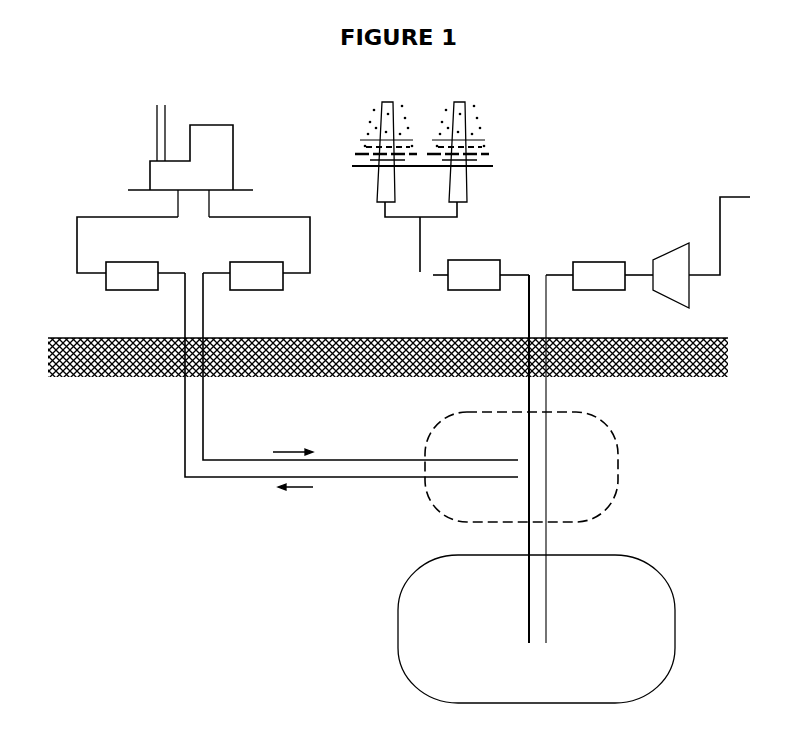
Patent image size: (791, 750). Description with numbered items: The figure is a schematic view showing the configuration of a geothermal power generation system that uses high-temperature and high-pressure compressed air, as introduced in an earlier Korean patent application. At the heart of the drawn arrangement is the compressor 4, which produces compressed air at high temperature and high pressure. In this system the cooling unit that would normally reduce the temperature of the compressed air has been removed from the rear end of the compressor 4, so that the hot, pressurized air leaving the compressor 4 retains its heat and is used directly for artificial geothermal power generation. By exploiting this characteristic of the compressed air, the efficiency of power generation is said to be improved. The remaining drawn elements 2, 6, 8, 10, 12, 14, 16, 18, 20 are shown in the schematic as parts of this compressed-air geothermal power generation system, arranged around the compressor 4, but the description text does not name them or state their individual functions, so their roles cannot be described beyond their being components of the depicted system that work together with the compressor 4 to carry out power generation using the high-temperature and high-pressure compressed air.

The exhaust stacks / combustion gas source 2 is at (376, 178).
The compressor 4 is at (470, 260).
The underground storage reservoir 6 is at (398, 632).
The injection and withdrawal well pipes 8 is at (529, 500).
The heat exchange zone 10 is at (432, 497).
The circulation pipes 12 is at (213, 461).
The heat exchanger unit 14 is at (285, 291).
The heat exchanger unit 16 is at (107, 288).
The expansion / treatment unit 18 is at (594, 262).
The turbine 20 is at (675, 248).